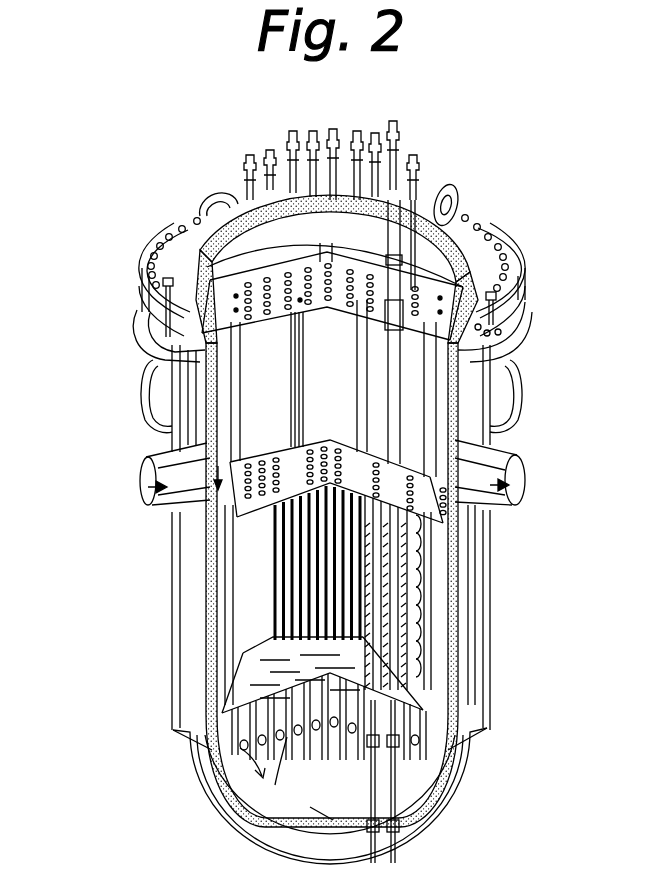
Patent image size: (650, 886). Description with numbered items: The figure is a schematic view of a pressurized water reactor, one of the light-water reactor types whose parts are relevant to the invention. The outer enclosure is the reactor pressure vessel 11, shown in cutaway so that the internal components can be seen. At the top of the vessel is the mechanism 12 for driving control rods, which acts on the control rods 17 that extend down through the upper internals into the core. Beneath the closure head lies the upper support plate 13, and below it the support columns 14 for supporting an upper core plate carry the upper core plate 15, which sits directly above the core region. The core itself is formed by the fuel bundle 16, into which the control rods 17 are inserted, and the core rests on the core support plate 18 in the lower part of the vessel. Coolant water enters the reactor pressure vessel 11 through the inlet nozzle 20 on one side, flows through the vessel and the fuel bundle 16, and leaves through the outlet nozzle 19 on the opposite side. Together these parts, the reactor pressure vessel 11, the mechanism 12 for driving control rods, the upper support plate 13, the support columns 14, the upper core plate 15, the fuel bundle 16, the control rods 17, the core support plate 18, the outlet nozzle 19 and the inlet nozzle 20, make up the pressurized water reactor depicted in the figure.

The reactor pressure vessel 11 is at (250, 197).
The mechanism for driving control rods 12 is at (400, 145).
The upper support plate 13 is at (242, 322).
The support columns 14 is at (225, 431).
The upper core plate 15 is at (212, 549).
The fuel bundle 16 is at (418, 597).
The control rods 17 is at (405, 372).
The core support plate 18 is at (245, 745).
The outlet nozzle 19 is at (523, 483).
The inlet nozzle 20 is at (142, 468).